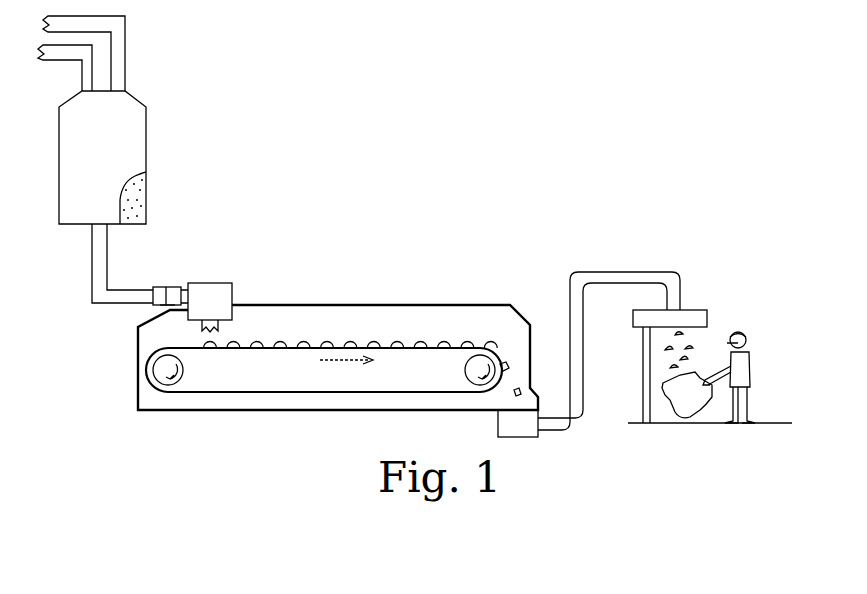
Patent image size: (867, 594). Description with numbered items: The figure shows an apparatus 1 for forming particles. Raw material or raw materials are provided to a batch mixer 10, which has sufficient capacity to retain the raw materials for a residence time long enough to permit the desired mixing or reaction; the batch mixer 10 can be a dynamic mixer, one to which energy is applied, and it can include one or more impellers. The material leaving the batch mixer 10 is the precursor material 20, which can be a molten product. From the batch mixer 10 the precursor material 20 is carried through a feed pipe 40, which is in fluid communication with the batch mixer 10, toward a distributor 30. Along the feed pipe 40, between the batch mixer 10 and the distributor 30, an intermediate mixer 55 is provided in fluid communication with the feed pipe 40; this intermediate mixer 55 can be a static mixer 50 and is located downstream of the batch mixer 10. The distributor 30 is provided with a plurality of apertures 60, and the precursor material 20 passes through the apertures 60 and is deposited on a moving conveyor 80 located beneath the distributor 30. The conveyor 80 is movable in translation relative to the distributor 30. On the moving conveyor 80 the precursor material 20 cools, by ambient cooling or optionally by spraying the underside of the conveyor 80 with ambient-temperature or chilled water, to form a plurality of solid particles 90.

The apparatus 1 is at (347, 222).
The batch mixer 10 is at (128, 165).
The precursor material 20 is at (146, 193).
The distributor 30 is at (217, 298).
The feed pipe 40 is at (138, 298).
The static mixer 50 is at (165, 298).
The intermediate mixer 55 is at (167, 306).
The apertures 60 is at (210, 330).
The conveyor 80 is at (200, 351).
The solid particles 90 is at (303, 344).